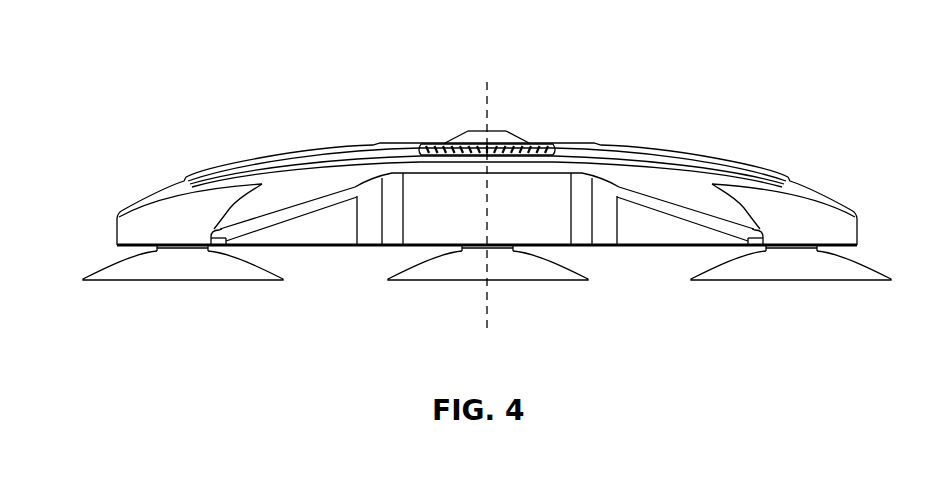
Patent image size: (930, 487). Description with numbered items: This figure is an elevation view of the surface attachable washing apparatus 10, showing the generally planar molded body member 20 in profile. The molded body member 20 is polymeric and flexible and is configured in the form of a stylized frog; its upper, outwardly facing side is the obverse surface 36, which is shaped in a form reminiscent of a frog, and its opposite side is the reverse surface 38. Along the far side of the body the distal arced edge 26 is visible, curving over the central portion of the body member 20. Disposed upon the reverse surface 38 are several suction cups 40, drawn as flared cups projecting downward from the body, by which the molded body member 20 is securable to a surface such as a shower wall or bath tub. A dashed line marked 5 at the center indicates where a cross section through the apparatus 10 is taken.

The surface attachable washing apparatus 10 is at (703, 72).
The molded body member 20 is at (126, 215).
The distal arced edge 26 is at (527, 203).
The obverse surface 36 is at (279, 153).
The reverse surface 38 is at (307, 248).
The suction cup 40 is at (184, 282).
The section line 5- 5 is at (487, 80).